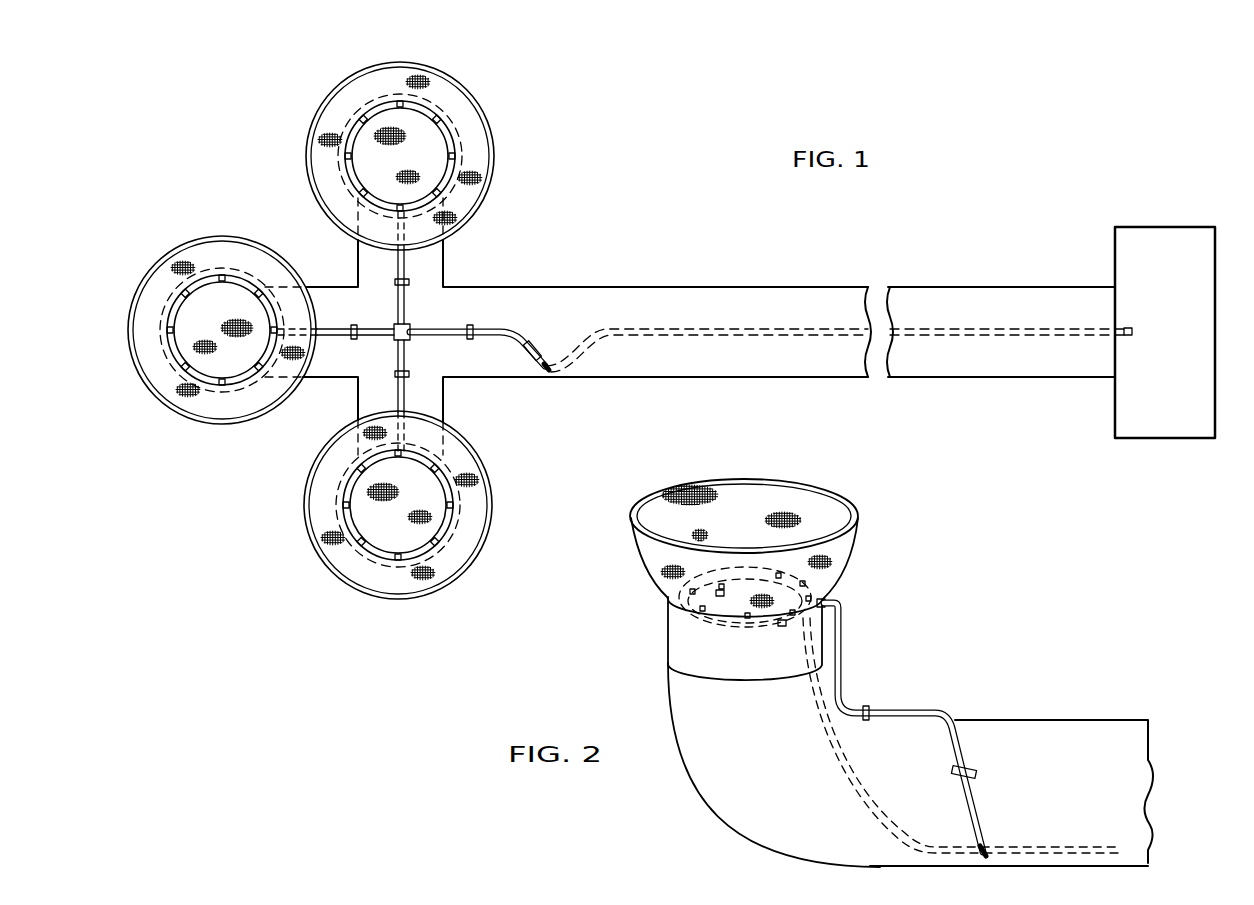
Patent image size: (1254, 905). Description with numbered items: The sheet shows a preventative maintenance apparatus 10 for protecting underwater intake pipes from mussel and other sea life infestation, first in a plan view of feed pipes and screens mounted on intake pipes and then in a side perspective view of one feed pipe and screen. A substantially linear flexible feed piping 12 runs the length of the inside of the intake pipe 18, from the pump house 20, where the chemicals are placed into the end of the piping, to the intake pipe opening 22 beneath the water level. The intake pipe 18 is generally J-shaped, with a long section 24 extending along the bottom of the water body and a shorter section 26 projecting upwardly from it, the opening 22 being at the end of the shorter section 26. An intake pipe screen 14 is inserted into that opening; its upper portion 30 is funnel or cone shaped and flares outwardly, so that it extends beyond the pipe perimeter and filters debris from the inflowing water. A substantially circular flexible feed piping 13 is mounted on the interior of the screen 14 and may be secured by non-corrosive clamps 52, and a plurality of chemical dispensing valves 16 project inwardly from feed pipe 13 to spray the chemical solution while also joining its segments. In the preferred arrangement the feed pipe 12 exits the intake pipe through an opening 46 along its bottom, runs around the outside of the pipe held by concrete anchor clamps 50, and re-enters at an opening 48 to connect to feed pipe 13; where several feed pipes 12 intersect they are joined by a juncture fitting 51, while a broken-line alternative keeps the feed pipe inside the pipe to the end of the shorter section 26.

In FIG. 1, the preventative maintenance apparatus 10 is at (479, 81).
In FIG. 2, the preventative maintenance apparatus 10 is at (880, 649).
In FIG. 1, the linear flexible feed piping 12 is at (406, 300).
In FIG. 2, the linear flexible feed piping 12 is at (798, 590).
In FIG. 1, the circular flexible feed piping 13 is at (353, 127).
In FIG. 1, the intake pipe screen 14 is at (471, 117).
In FIG. 2, the intake pipe screen 14 is at (822, 500).
In FIG. 1, the chemical dispensing valves 16 is at (399, 103).
In FIG. 2, the chemical dispensing valves 16 is at (820, 582).
In FIG. 1, the intake pipe 18 is at (432, 250).
In FIG. 2, the intake pipe 18 is at (1087, 716).
In FIG. 1, the pump house 20 is at (1168, 240).
In FIG. 1, the intake pipe opening 22 is at (458, 160).
In FIG. 2, the intake pipe opening 22 is at (702, 610).
In FIG. 1, the long section 24 is at (738, 297).
In FIG. 2, the long section 24 is at (1028, 740).
In FIG. 2, the shorter section 26 is at (690, 722).
In FIG. 2, the upper portion 30 is at (638, 540).
In FIG. 1, the opening 46 is at (549, 372).
In FIG. 2, the opening 46 is at (992, 850).
In FIG. 1, the opening 48 is at (423, 208).
In FIG. 2, the opening 48 is at (826, 603).
In FIG. 1, the concrete anchor clamps 50 is at (356, 325).
In FIG. 2, the concrete anchor clamps 50 is at (869, 710).
In FIG. 1, the juncture fitting 51 is at (410, 325).
In FIG. 2, the non-corrosive clamps 52 is at (722, 588).